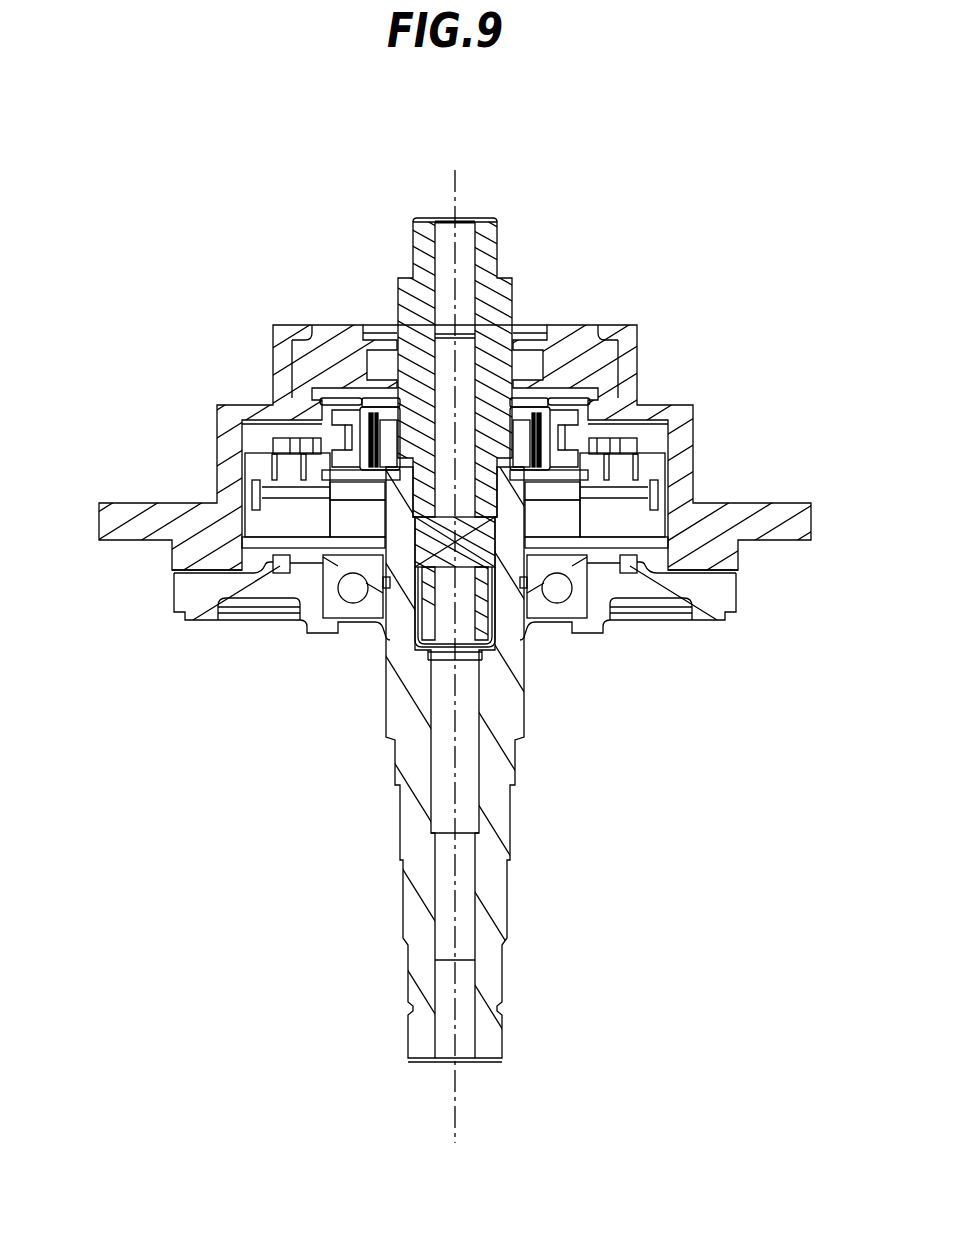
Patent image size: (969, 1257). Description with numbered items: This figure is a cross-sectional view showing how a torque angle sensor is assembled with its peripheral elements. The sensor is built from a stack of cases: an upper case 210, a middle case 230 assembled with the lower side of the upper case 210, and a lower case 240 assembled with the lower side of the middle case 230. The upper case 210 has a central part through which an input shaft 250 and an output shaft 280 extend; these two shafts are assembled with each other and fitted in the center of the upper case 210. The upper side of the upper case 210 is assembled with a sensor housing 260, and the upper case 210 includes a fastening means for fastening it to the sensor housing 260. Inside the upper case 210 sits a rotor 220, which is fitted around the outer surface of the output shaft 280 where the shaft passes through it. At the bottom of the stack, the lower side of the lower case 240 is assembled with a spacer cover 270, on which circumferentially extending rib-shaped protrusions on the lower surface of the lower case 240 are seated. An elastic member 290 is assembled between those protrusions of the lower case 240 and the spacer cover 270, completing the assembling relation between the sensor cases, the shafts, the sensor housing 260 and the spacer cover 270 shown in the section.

The upper case 210 is at (330, 398).
The rotor 220 is at (522, 438).
The middle case 230 is at (275, 468).
The lower case 240 is at (277, 548).
The input shaft 250 is at (490, 232).
The sensor housing 260 is at (783, 512).
The spacer cover 270 is at (720, 592).
The output shaft 280 is at (494, 975).
The elastic member 290 is at (283, 573).